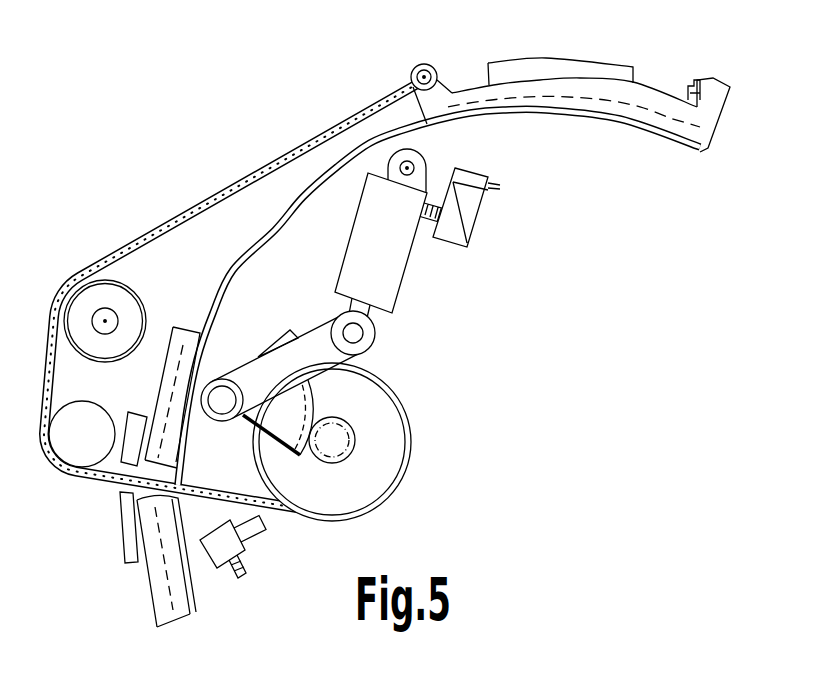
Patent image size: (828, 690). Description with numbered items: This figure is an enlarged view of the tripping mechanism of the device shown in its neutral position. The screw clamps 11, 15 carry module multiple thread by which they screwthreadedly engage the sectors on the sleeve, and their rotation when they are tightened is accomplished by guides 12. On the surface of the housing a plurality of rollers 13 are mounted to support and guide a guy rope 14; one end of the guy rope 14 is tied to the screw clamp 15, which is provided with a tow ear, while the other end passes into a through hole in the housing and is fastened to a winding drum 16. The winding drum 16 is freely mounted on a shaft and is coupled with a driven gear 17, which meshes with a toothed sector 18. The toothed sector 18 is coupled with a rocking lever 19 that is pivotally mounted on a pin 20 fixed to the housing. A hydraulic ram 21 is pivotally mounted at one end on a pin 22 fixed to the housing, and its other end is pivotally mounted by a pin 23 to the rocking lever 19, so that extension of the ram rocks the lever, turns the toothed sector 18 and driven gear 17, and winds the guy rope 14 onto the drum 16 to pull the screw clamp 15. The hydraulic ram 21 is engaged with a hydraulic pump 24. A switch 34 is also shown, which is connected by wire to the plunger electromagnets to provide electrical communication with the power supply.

The screw clamp 11 is at (155, 580).
The guide 12 is at (538, 65).
The roller 13 is at (128, 297).
The guy rope 14 is at (293, 150).
The screw clamp 15 is at (463, 97).
The winding drum 16 is at (392, 438).
The driven gear 17 is at (333, 452).
The toothed sector 18 is at (272, 415).
The rocking lever 19 is at (327, 343).
The pin 20 is at (223, 397).
The hydraulic ram 21 is at (390, 287).
The pin 22 is at (407, 165).
The pin 23 is at (360, 333).
The hydraulic pump 24 is at (467, 217).
The switch 34 is at (223, 550).